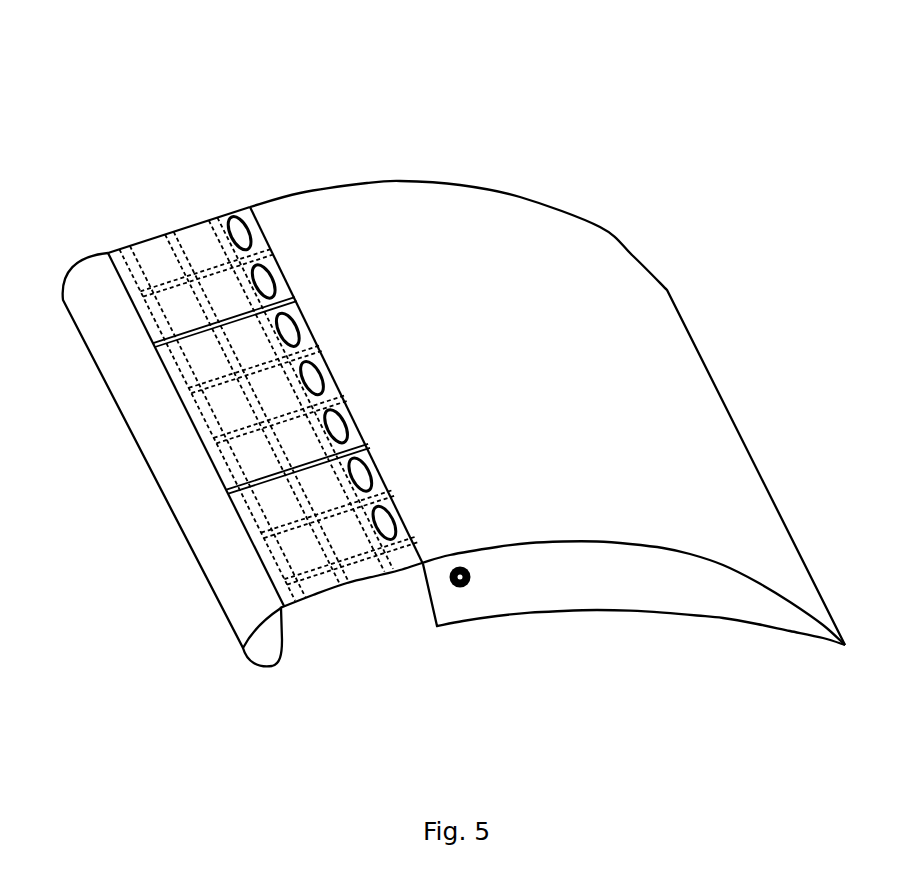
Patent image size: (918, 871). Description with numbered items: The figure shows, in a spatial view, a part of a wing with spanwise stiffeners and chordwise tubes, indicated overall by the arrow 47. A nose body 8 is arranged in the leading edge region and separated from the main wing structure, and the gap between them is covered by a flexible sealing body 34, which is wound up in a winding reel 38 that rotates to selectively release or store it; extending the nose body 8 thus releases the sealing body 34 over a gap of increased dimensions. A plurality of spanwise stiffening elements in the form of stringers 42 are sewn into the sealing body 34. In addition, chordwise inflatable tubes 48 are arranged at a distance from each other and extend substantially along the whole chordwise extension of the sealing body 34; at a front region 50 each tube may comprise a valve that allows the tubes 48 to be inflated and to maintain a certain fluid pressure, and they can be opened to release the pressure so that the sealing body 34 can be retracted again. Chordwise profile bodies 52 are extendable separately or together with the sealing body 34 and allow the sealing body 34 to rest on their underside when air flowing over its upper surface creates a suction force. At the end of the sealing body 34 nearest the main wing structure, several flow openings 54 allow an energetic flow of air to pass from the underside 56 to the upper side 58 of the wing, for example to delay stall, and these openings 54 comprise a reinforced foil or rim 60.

The nose body 8 is at (235, 632).
The sealing body 34 is at (150, 253).
The winding reel 38 is at (461, 566).
The stringers 42 is at (177, 240).
The cover assembly 47 is at (492, 82).
The chordwise inflatable tubes 48 is at (134, 299).
The front region 50 is at (283, 595).
The chordwise profile bodies 52 is at (155, 350).
The flow openings 54 is at (260, 227).
The underside 56 is at (350, 605).
The upper side 58 is at (173, 305).
The reinforced foil or rim 60 is at (323, 382).